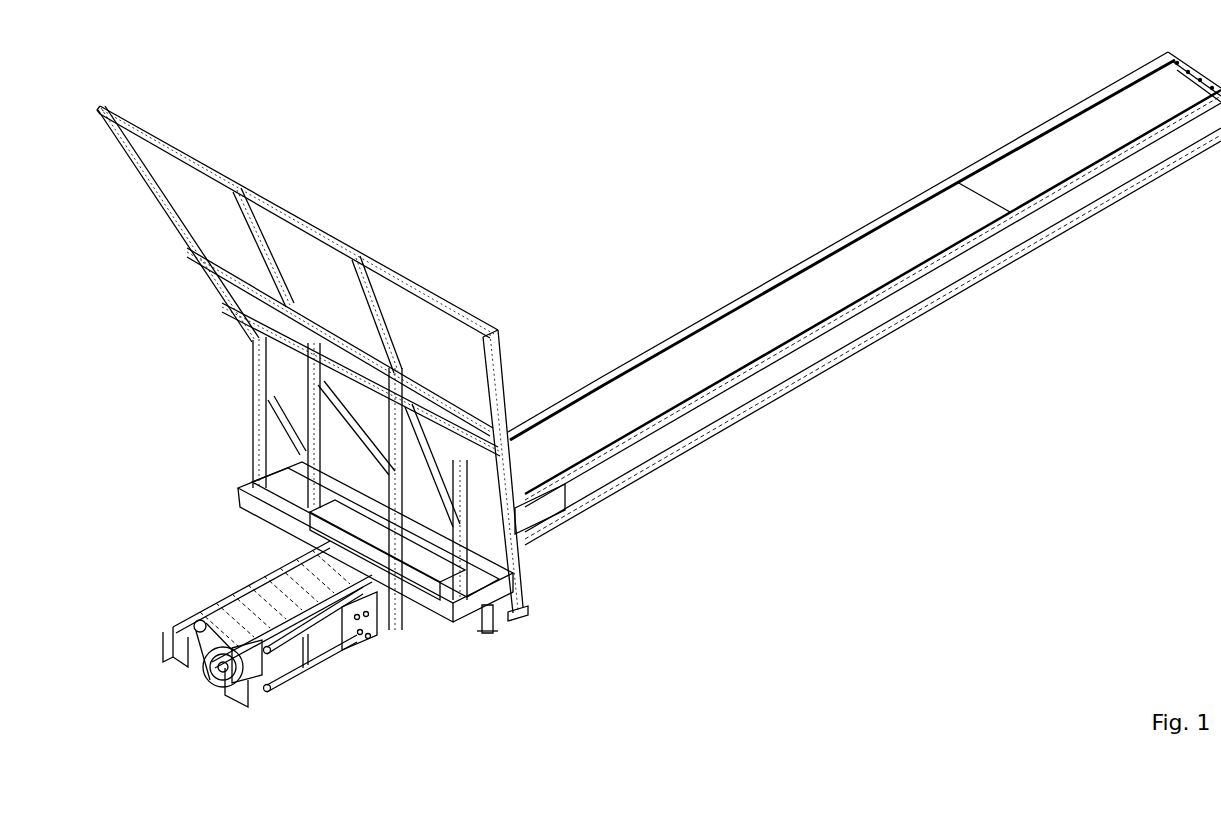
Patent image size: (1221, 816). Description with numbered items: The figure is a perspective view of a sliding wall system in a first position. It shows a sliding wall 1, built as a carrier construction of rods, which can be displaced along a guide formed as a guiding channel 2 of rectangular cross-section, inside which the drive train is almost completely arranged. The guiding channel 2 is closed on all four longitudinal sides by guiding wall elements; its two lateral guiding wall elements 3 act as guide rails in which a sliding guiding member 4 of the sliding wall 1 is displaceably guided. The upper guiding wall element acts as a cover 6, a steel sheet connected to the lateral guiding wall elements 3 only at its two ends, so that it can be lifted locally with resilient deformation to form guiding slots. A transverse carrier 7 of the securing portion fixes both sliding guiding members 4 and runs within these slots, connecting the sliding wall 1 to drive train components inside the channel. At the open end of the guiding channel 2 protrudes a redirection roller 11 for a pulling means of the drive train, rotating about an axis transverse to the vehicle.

The sliding wall 1 is at (298, 196).
The guiding channel 2 is at (822, 243).
The lateral guiding wall elements 3 is at (914, 297).
The sliding guiding member 4 is at (368, 622).
The cover 6 is at (1006, 167).
The transverse carrier 7 is at (280, 562).
The redirection roller 11 is at (195, 674).